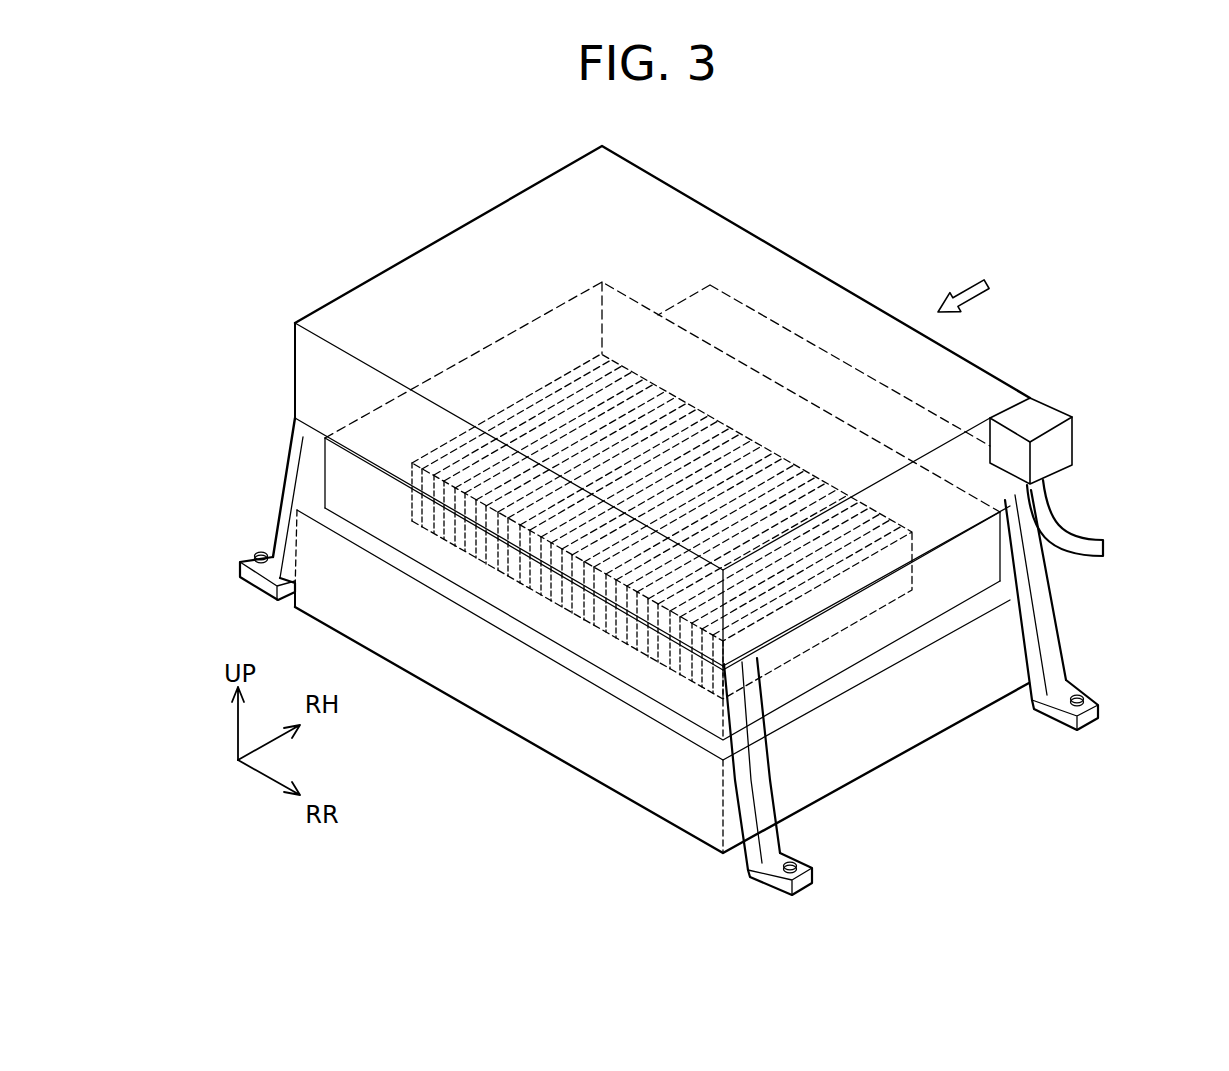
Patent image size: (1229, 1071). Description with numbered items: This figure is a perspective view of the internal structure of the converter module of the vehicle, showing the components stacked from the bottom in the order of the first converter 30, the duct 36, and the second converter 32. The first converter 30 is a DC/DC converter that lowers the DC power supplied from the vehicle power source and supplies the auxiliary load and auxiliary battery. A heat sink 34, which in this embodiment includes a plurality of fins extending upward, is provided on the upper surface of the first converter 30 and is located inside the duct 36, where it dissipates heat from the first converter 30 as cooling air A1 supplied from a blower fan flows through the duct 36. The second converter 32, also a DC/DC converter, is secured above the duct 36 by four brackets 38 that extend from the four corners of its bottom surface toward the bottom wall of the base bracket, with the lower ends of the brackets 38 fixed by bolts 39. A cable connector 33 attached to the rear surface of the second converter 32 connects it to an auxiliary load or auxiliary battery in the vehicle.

The first converter 30 is at (465, 687).
The second converter 32 is at (440, 257).
The cable connector 33 is at (1042, 417).
The heat sink 34 is at (820, 628).
The duct 36 is at (617, 667).
The bracket 38 is at (242, 571).
The bolt 39 is at (256, 554).
The cooling air A1 is at (975, 285).